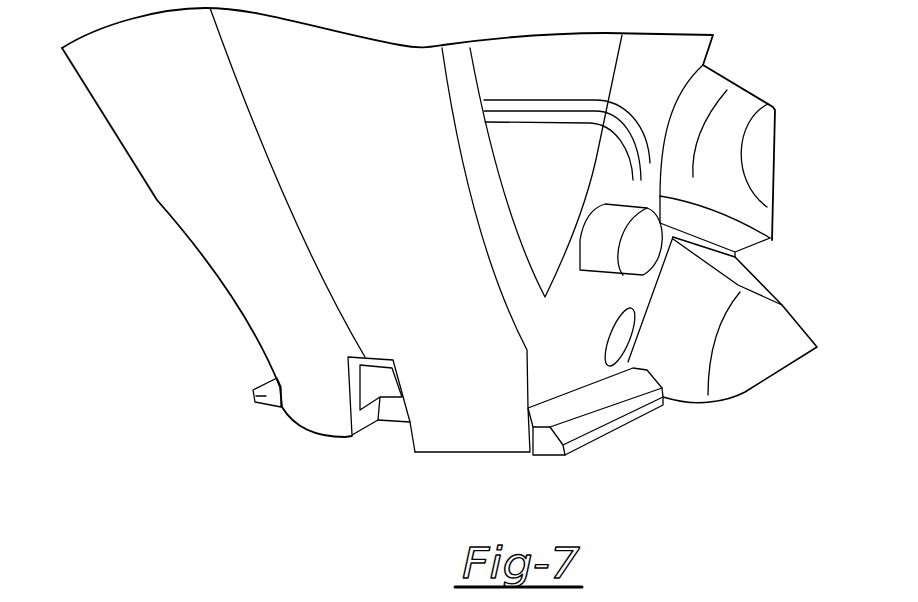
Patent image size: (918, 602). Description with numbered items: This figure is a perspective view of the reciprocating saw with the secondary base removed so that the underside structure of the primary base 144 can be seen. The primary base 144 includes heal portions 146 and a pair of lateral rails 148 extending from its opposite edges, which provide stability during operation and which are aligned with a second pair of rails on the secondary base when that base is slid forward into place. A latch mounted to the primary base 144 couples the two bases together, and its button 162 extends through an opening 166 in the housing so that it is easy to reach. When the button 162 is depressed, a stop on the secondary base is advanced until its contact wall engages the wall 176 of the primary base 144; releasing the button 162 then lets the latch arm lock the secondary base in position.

The primary base 144 is at (135, 310).
The heal portions 146 is at (772, 353).
The lateral rails 148 is at (253, 393).
The button 162 is at (618, 212).
The opening 166 is at (573, 255).
The wall 176 is at (395, 410).